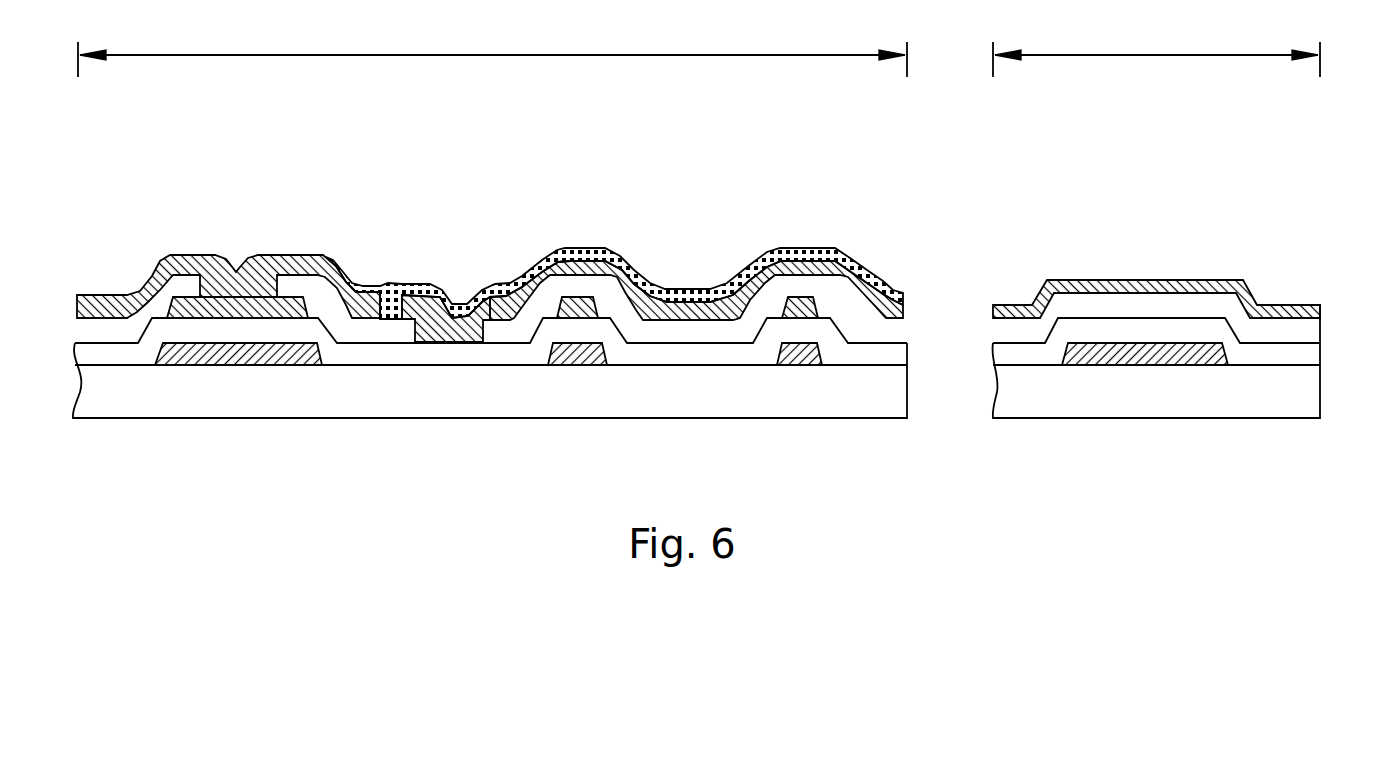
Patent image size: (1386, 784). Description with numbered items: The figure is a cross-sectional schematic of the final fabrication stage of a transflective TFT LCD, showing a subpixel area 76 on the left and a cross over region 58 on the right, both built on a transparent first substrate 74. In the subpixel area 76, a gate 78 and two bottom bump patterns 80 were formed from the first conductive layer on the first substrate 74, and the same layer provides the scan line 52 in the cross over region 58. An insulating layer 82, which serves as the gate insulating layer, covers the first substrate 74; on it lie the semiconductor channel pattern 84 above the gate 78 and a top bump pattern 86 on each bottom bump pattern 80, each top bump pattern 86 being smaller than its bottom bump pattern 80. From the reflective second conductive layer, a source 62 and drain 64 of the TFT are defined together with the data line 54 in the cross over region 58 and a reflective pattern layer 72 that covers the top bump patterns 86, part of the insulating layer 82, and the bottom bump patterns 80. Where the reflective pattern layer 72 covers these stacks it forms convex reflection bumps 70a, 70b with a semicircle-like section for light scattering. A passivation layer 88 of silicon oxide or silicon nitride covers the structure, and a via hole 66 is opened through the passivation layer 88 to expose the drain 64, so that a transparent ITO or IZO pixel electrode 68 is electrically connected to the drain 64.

The scan line 52 is at (1142, 367).
The data line 54 is at (1302, 331).
The cross over region 58 is at (1156, 49).
The source 62 is at (176, 282).
The drain 64 is at (432, 297).
The via hole 66 is at (410, 319).
The pixel electrode 68 is at (860, 270).
The reflection bump 70a is at (585, 200).
The reflection bump 70b is at (815, 200).
The reflective pattern layer 72 is at (616, 310).
The first substrate 74 is at (859, 406).
The subpixel area 76 is at (492, 49).
The gate 78 is at (240, 367).
The bottom bump pattern 80 is at (579, 367).
The insulating layer 82 is at (88, 360).
The channel pattern 84 is at (261, 308).
The top bump pattern 86 is at (578, 303).
The passivation layer 88 is at (77, 306).